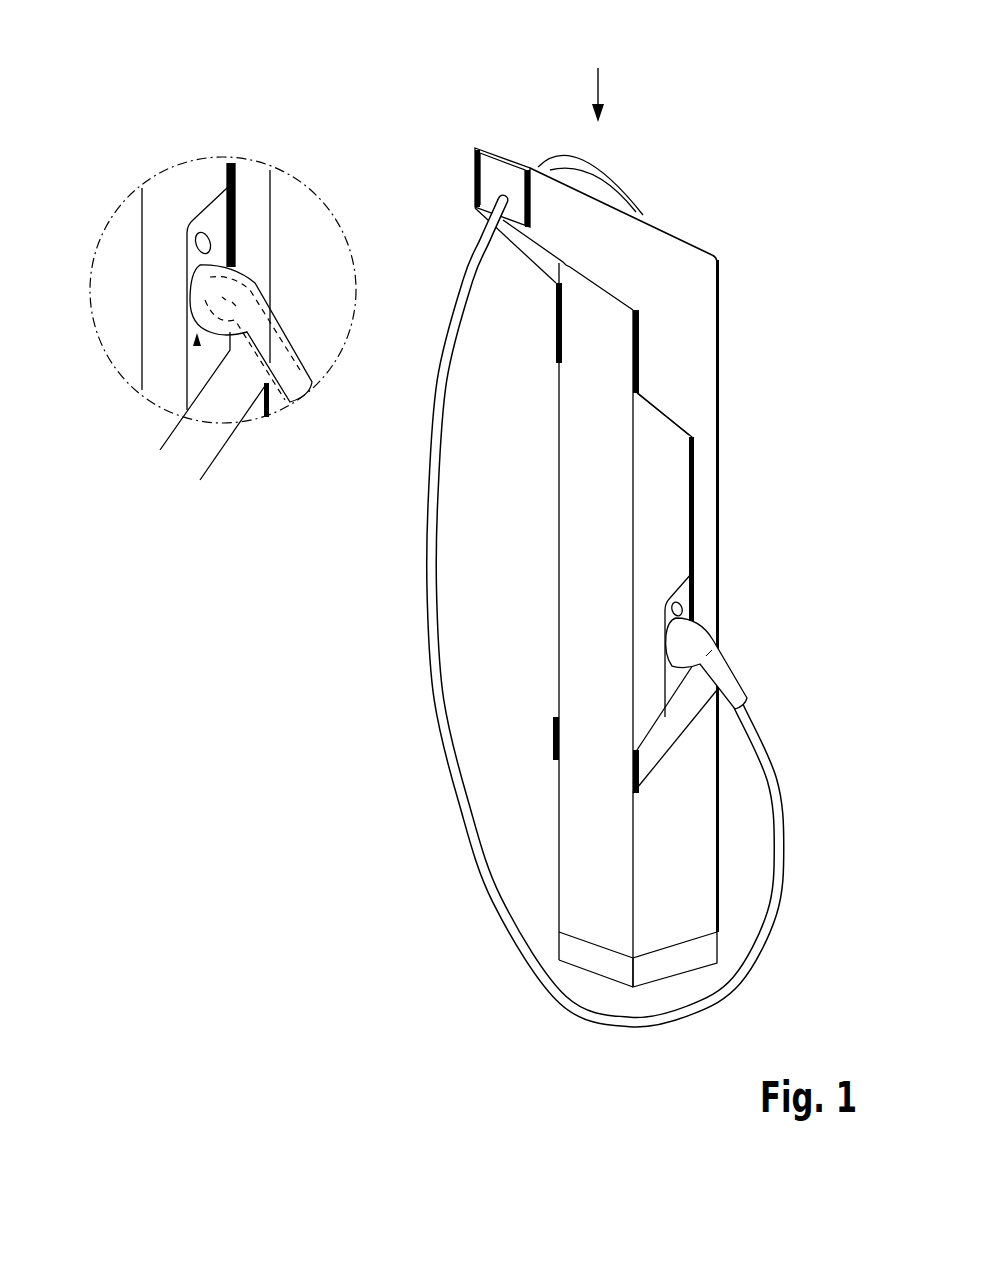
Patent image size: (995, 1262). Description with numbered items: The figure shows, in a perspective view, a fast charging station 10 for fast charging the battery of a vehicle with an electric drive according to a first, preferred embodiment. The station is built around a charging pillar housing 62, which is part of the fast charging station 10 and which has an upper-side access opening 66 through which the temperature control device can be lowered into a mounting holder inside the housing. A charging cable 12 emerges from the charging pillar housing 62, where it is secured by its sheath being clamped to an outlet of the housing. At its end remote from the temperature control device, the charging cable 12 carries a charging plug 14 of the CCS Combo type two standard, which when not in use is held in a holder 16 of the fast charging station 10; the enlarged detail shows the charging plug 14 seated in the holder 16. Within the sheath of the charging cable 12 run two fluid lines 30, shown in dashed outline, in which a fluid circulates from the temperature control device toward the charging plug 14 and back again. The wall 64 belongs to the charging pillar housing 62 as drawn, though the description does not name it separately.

The fast charging station 10 is at (649, 561).
The charging cable 12 is at (438, 668).
The charging plug 14 is at (677, 645).
The holder 16 is at (689, 620).
The fluid lines 30 is at (270, 268).
The charging pillar housing 62 is at (721, 423).
The side wall 64 is at (707, 328).
The upper-side access opening 66 is at (600, 83).